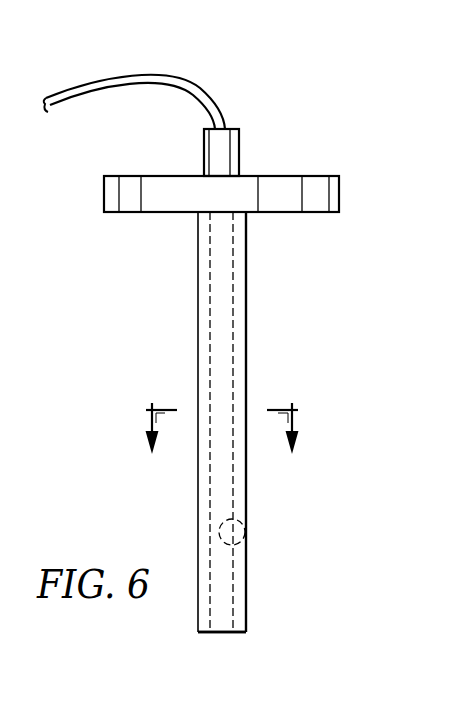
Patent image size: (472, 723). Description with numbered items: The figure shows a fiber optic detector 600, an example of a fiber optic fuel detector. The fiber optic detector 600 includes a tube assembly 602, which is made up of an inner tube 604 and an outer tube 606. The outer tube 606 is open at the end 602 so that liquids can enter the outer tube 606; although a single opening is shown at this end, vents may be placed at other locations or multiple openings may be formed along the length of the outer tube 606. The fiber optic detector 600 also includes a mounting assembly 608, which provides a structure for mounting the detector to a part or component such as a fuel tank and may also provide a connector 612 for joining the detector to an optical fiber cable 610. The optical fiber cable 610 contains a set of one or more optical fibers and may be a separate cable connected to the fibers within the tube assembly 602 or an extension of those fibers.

The fiber optic detector 600 is at (307, 112).
The tube assembly 602 is at (222, 633).
The inner tube 604 is at (247, 533).
The outer tube 606 is at (246, 283).
The mounting assembly 608 is at (339, 190).
The optical fiber cable 610 is at (87, 83).
The connector 612 is at (202, 38).